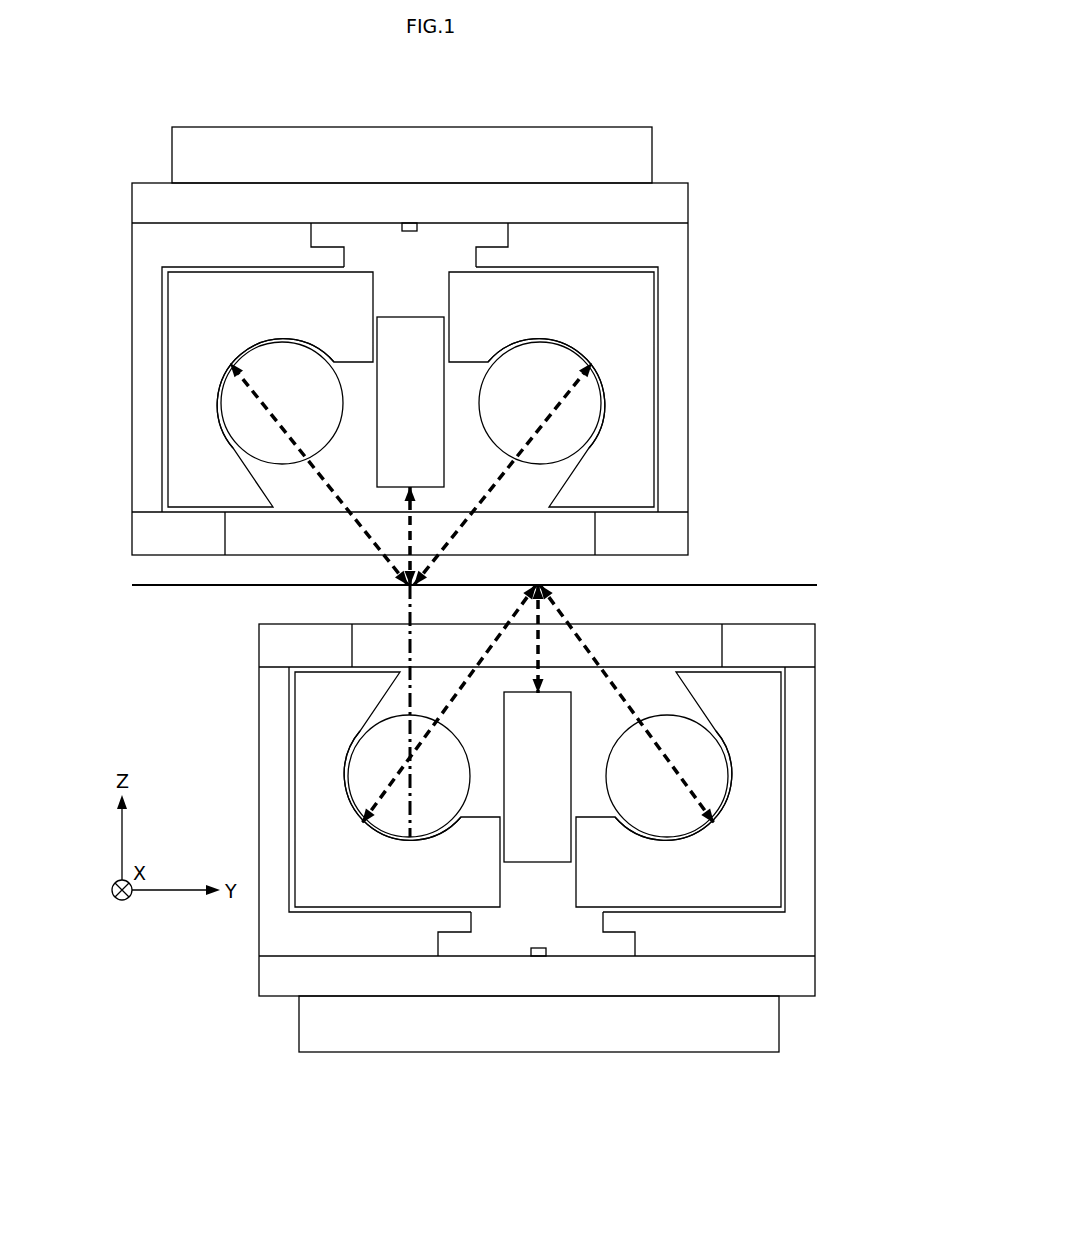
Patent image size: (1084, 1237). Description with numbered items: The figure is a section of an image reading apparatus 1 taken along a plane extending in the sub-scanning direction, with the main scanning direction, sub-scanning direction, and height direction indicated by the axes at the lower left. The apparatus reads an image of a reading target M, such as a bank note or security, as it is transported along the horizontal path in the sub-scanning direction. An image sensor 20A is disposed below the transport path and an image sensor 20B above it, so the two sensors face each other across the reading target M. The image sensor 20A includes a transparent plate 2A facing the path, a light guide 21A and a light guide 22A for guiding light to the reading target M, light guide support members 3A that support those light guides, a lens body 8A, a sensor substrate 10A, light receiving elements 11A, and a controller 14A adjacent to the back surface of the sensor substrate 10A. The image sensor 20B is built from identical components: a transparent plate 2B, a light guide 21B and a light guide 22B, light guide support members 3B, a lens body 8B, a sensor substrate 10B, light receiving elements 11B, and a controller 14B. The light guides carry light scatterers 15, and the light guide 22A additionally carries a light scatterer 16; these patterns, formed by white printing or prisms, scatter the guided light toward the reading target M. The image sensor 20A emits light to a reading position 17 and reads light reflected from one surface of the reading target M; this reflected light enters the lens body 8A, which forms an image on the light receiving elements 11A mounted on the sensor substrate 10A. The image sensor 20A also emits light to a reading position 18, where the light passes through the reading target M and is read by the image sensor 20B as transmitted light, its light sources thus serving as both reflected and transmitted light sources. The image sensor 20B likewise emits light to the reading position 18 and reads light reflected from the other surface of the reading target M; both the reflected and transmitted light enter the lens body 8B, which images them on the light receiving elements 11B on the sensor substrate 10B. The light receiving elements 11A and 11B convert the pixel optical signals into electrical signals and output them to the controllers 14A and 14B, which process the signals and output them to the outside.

The image reading apparatus 1 is at (705, 128).
The transparent plate 2A is at (700, 653).
The transparent plate 2B is at (250, 538).
The light guide support member 3A is at (755, 807).
The light guide support member 3B is at (637, 307).
The lens body 8A is at (537, 842).
The lens body 8B is at (411, 328).
The sensor substrate 10A is at (778, 983).
The sensor substrate 10B is at (632, 202).
The light receiving element 11A is at (543, 956).
The light receiving element 11B is at (415, 222).
The controller 14A is at (747, 1018).
The controller 14B is at (615, 162).
The light scatterer 15 is at (250, 346).
The light scatterer 16 is at (417, 838).
The reading position 17 is at (538, 585).
The reading position 18 is at (402, 587).
The image sensor 20A is at (815, 842).
The image sensor 20B is at (688, 423).
The light guide 21A is at (695, 760).
The light guide 21B is at (565, 415).
The light guide 22A is at (377, 758).
The light guide 22B is at (250, 418).
The reading target M is at (758, 583).